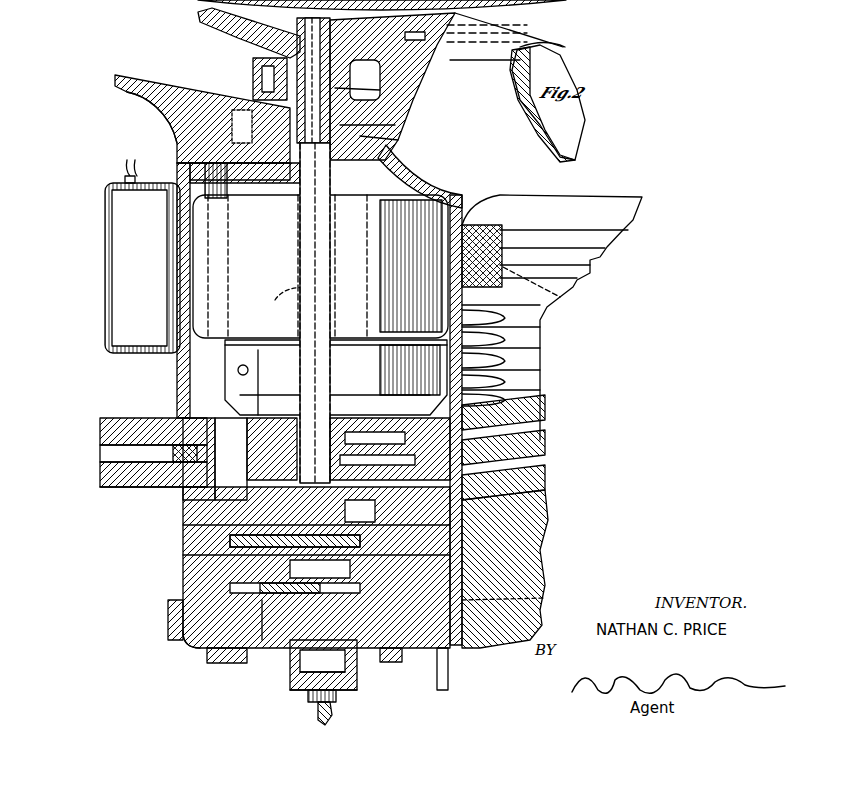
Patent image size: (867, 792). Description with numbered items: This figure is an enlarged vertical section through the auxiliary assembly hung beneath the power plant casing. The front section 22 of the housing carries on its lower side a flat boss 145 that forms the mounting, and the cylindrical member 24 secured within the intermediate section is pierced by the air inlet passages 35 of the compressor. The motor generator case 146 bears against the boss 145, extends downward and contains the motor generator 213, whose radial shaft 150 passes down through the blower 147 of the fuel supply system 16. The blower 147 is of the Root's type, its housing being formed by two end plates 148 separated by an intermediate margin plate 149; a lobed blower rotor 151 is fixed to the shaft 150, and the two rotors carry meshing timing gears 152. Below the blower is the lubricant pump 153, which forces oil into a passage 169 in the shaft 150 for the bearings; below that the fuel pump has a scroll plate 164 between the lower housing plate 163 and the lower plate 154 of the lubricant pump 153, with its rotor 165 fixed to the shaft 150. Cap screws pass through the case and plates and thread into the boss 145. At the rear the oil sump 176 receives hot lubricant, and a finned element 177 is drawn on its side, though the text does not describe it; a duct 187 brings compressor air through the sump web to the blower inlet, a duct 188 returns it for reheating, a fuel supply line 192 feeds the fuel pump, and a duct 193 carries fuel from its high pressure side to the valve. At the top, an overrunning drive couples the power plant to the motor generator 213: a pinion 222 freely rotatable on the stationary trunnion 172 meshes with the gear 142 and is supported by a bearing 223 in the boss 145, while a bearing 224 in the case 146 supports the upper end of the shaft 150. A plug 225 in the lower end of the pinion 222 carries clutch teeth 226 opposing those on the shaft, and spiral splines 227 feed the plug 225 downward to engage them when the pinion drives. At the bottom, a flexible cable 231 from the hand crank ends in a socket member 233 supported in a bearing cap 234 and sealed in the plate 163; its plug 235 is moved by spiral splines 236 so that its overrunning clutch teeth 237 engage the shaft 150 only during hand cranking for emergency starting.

The fuel supply system 16 is at (190, 615).
The front section 22 is at (115, 80).
The cylindrical member 24 is at (540, 43).
The air inlet passages 35 is at (505, 130).
The gear 142 is at (253, 75).
The boss 145 is at (177, 122).
The motor generator case 146 is at (180, 372).
The blower 147 is at (106, 498).
The end plates 148 is at (100, 422).
The intermediate margin plate 149 is at (110, 452).
The shaft 150 is at (300, 380).
The blower rotor 151 is at (258, 402).
The timing gears 152 is at (200, 500).
The pump 153 is at (470, 515).
The lower plate 154 is at (190, 565).
The lower housing plate 163 is at (185, 640).
The scroll plate 164 is at (190, 590).
The rotor 165 is at (262, 600).
The passage 169 is at (278, 298).
The trunnion 172 is at (262, 56).
The oil sump 176 is at (583, 224).
The bellows 177 is at (470, 367).
The duct 187 is at (535, 420).
The duct 188 is at (540, 450).
The fuel supply line 192 is at (448, 675).
The duct 193 is at (470, 600).
The motor generator 213 is at (272, 258).
The pinion 222 is at (340, 96).
The bearing 223 is at (272, 104).
The bearing 224 is at (400, 152).
The plug 225 is at (345, 118).
The clutch teeth 226 is at (380, 140).
The spiral splines 227 is at (350, 128).
The flexible cable 231 is at (334, 714).
The socket member 233 is at (357, 690).
The bearing cap 234 is at (308, 692).
The plug 235 is at (357, 672).
The spiral splines 236 is at (300, 665).
The overrunning clutch teeth 237 is at (395, 660).